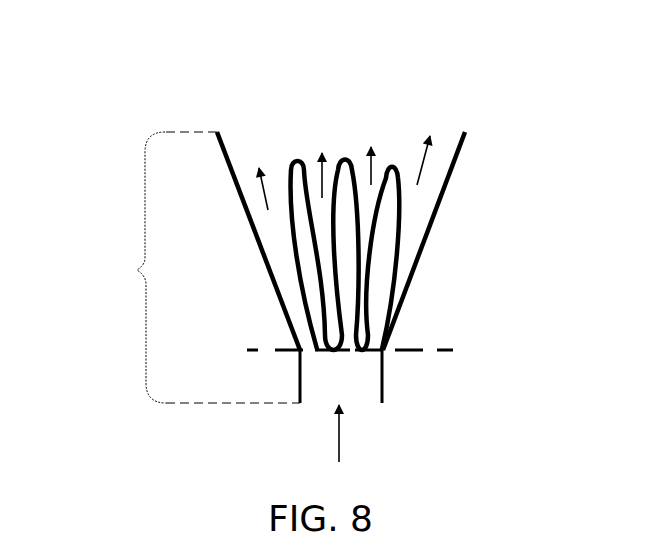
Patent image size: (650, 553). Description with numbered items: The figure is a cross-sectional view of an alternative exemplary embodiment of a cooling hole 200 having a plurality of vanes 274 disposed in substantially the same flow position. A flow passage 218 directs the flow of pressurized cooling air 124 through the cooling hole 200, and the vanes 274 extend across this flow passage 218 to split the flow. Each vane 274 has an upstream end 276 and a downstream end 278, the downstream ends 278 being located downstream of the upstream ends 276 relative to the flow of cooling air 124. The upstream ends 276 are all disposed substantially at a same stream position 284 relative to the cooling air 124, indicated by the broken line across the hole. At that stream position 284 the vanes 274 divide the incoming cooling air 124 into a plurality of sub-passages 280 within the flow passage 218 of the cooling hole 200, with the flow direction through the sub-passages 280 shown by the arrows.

The cooling hole 200 is at (165, 89).
The flow passage 218 is at (131, 270).
The vane 274 is at (333, 274).
The upstream end 276 is at (366, 353).
The downstream end 278 is at (297, 158).
The sub-passage 280 is at (368, 183).
The stream position 284 is at (448, 350).
The cooling air 124 is at (339, 440).